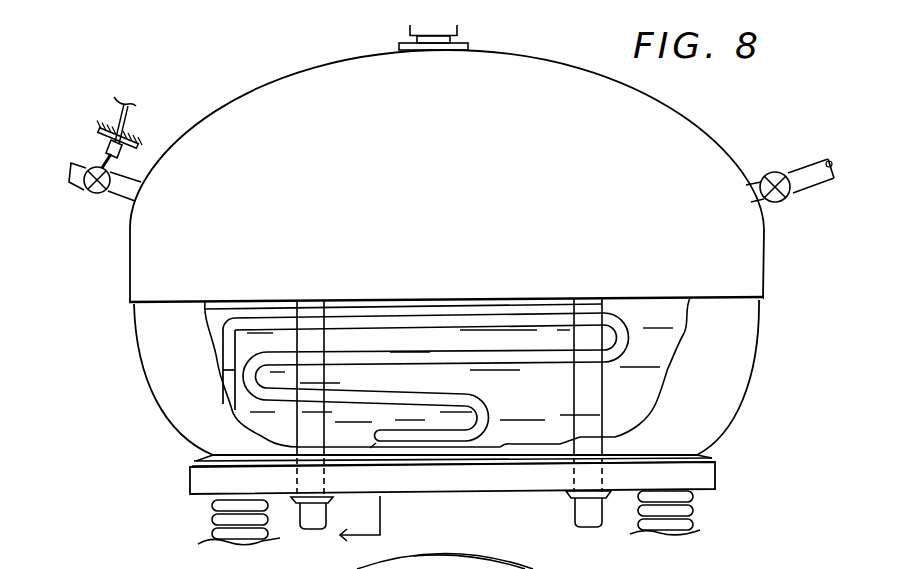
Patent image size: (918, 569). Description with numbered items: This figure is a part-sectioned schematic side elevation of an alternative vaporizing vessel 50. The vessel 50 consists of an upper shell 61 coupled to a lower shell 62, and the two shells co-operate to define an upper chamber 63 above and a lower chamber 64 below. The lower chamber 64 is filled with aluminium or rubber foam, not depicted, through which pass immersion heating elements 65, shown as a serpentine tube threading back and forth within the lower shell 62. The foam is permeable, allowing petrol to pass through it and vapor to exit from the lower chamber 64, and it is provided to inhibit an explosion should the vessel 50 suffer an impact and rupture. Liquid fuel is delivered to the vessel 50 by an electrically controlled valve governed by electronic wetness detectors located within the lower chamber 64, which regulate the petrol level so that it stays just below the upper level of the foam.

The vaporizing vessel 50 is at (451, 285).
The upper shell 61 is at (419, 142).
The lower shell 62 is at (722, 385).
The upper chamber 63 is at (513, 263).
The lower chamber 64 is at (513, 380).
The immersion heating elements 65 is at (375, 392).